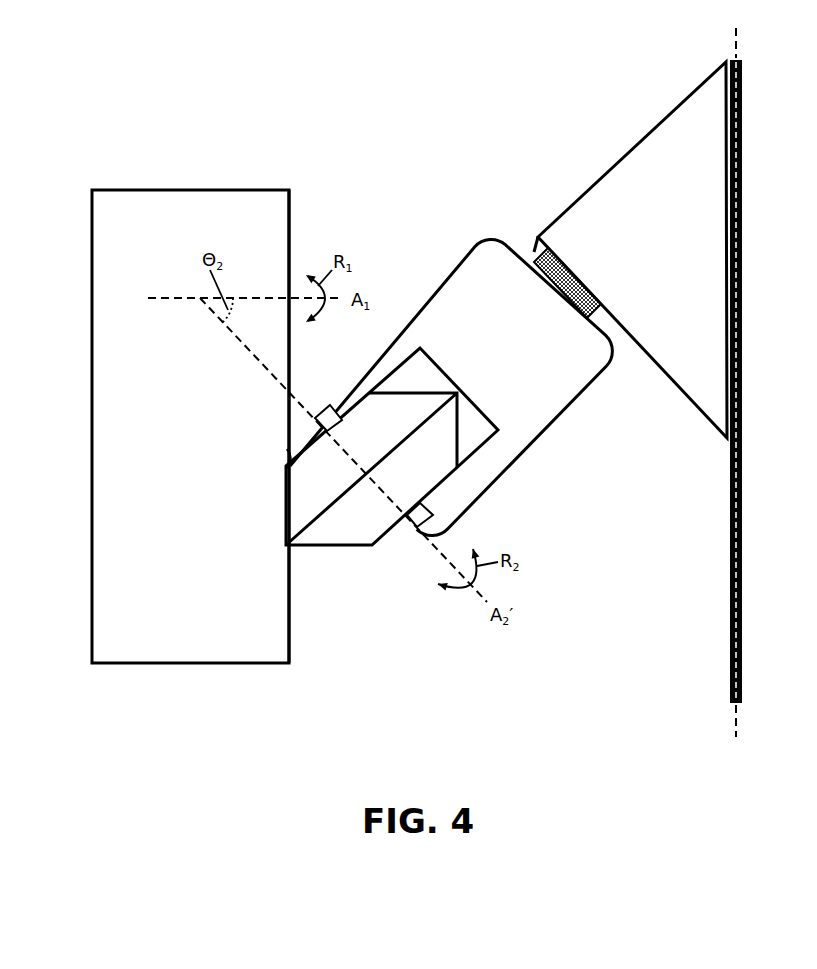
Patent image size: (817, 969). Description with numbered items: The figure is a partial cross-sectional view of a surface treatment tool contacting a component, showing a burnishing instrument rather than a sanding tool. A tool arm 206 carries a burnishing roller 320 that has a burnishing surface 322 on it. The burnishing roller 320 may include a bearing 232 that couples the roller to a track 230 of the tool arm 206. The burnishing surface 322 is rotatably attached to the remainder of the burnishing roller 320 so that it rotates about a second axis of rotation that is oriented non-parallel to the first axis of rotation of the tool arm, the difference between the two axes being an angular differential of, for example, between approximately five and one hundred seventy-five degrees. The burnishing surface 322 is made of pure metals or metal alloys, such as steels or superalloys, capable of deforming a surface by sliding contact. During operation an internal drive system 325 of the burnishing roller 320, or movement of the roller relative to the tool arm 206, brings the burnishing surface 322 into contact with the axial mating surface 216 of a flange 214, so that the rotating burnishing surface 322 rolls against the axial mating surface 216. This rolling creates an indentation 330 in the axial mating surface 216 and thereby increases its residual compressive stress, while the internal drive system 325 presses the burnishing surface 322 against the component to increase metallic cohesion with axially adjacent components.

The tool arm 206 is at (778, 542).
The flange 214 is at (180, 389).
The axial mating surface 216 is at (290, 209).
The track 230 is at (740, 223).
The bearing 232 is at (727, 337).
The burnishing roller 320 is at (518, 468).
The burnishing surface 322 is at (313, 548).
The internal drive system 325 is at (332, 412).
The indentation 330 is at (276, 452).